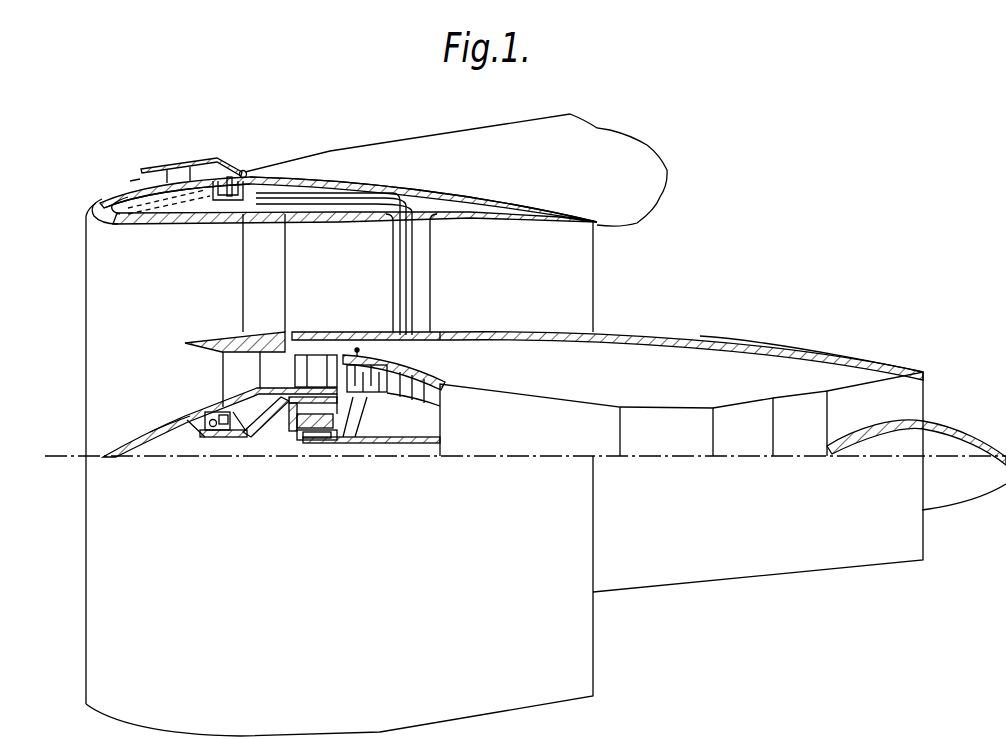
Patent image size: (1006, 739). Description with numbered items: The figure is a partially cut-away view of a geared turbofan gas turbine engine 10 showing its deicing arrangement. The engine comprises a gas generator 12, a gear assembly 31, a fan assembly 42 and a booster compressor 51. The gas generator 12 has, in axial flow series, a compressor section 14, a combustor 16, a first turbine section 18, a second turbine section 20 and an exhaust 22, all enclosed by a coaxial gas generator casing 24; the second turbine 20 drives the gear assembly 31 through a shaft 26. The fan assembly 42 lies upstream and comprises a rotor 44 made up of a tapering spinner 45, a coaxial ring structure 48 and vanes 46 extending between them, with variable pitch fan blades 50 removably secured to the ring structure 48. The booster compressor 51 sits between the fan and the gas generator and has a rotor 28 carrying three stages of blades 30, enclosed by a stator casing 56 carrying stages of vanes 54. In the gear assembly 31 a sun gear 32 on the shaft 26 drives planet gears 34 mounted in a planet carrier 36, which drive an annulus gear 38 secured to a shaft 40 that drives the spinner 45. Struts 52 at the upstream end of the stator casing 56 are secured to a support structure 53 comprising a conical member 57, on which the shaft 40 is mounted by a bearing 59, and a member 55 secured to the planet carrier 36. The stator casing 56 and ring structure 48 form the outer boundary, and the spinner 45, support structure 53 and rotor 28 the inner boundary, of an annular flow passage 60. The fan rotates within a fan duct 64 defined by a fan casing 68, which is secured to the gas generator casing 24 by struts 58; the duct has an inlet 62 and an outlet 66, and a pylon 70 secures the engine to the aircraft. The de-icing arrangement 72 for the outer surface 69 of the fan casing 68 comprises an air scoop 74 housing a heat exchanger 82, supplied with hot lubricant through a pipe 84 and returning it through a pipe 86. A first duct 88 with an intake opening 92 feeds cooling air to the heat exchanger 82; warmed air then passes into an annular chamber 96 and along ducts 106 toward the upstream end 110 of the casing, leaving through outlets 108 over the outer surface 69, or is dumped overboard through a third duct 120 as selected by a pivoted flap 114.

The geared turbofan gas turbine engine 10 is at (600, 684).
The gas generator 12 is at (700, 362).
The compressor section 14 is at (517, 443).
The combustor 16 is at (654, 443).
The first turbine section 18 is at (734, 443).
The second turbine section 20 is at (786, 443).
The exhaust 22 is at (913, 402).
The gas generator casing 24 is at (797, 350).
The shaft 26 is at (330, 443).
The rotor 28 is at (370, 397).
The blades 30 is at (398, 360).
The gear assembly 31 is at (344, 452).
The sun gear 32 is at (316, 440).
The planet gears 34 is at (290, 432).
The planet carrier 36 is at (292, 441).
The annulus gear 38 is at (315, 413).
The shaft 40 is at (210, 437).
The fan assembly 42 is at (128, 387).
The rotor 44 is at (140, 427).
The spinner 45 is at (177, 412).
The vanes 46 is at (230, 372).
The ring structure 48 is at (220, 343).
The fan blades 50 is at (253, 305).
The booster compressor 51 is at (352, 350).
The struts 52 is at (297, 333).
The support structure 53 is at (262, 440).
The vanes 54 is at (359, 352).
The member 55 is at (348, 397).
The stator casing 56 is at (440, 385).
The conical member 57 is at (228, 437).
The struts 58 is at (430, 302).
The bearing 59 is at (197, 437).
The annular flow passage 60 is at (264, 388).
The inlet 62 is at (100, 330).
The fan duct 64 is at (499, 283).
The outlet 66 is at (592, 278).
The fan casing 68 is at (357, 190).
The outer surface 69 is at (318, 180).
The pylon 70 is at (538, 135).
The de-icing arrangement 72 is at (130, 183).
The air scoop 74 is at (172, 150).
The heat exchanger 82 is at (188, 172).
The pipe 84 is at (363, 197).
The pipe 86 is at (313, 198).
The first duct 88 is at (155, 176).
The intake opening 92 is at (133, 178).
The annular chamber 96 is at (231, 177).
The ducts 106 is at (176, 212).
The outlets 108 is at (102, 197).
The upstream end 110 is at (98, 213).
The flap 114 is at (233, 170).
The third duct 120 is at (248, 168).